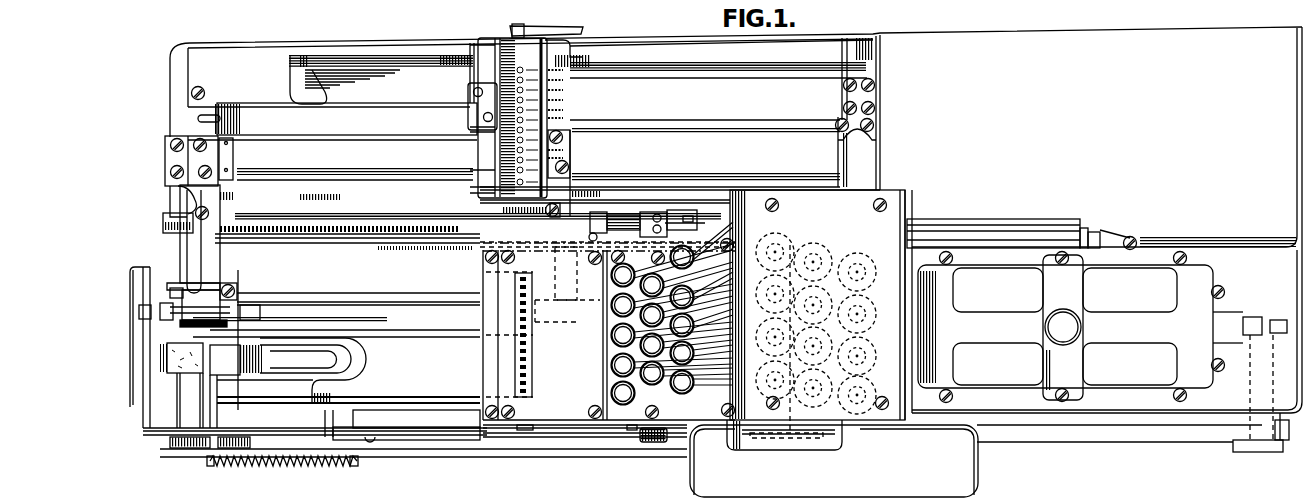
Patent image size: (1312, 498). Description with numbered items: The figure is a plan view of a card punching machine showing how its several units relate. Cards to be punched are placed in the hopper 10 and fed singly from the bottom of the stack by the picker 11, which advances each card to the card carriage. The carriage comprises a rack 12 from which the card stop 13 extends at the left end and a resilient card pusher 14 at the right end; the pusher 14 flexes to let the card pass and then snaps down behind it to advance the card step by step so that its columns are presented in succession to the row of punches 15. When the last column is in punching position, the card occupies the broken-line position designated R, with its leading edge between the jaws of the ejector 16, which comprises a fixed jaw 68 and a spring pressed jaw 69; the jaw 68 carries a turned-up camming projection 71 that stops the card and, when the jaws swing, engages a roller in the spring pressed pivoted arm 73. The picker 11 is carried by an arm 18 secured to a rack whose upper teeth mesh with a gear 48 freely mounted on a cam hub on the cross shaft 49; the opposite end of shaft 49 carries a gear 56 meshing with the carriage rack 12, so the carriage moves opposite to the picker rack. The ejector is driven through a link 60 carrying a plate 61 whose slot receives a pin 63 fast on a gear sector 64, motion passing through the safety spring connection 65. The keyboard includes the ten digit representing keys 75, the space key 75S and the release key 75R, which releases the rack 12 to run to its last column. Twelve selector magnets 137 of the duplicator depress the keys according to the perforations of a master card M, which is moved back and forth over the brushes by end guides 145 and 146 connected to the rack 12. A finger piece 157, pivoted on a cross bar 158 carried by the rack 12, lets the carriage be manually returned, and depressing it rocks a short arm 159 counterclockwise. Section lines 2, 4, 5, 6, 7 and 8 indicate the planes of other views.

The master card M is at (233, 110).
The section line 2 / side frame bar 2 is at (143, 277).
The section line 4 is at (365, 403).
The section line 5 is at (428, 345).
The section line 6 is at (568, 420).
The section line 7 is at (145, 182).
The section line 8 is at (143, 240).
The hopper 10 is at (1150, 248).
The picker 11 is at (1252, 317).
The rack 12 is at (300, 152).
The card stop 13 is at (245, 301).
The card pusher 14 is at (583, 316).
The punches 15 is at (540, 353).
The ejector 16 is at (231, 417).
The arm 18 is at (1260, 452).
The gear 48 is at (822, 442).
The cross shaft 49 is at (790, 412).
The gear 56 is at (170, 442).
The link 60 is at (494, 455).
The plate 61 is at (165, 448).
The pin 63 is at (213, 462).
The gear sector 64 is at (267, 452).
The safety spring connection 65 is at (337, 463).
The fixed jaw 68 is at (342, 352).
The spring pressed jaw 69 is at (245, 407).
The camming projection 71 is at (203, 359).
The pivoted arm 73 is at (156, 308).
The digit representing keys 75 is at (610, 318).
The space key 75S is at (621, 402).
The release key 75R is at (707, 258).
The selector magnets 137 is at (838, 255).
The end guide 145 is at (572, 163).
The end guide 146 is at (265, 172).
The finger piece 157 is at (225, 250).
The cross bar 158 is at (180, 300).
The short arm 159 is at (190, 210).
The card in last column position R is at (300, 402).